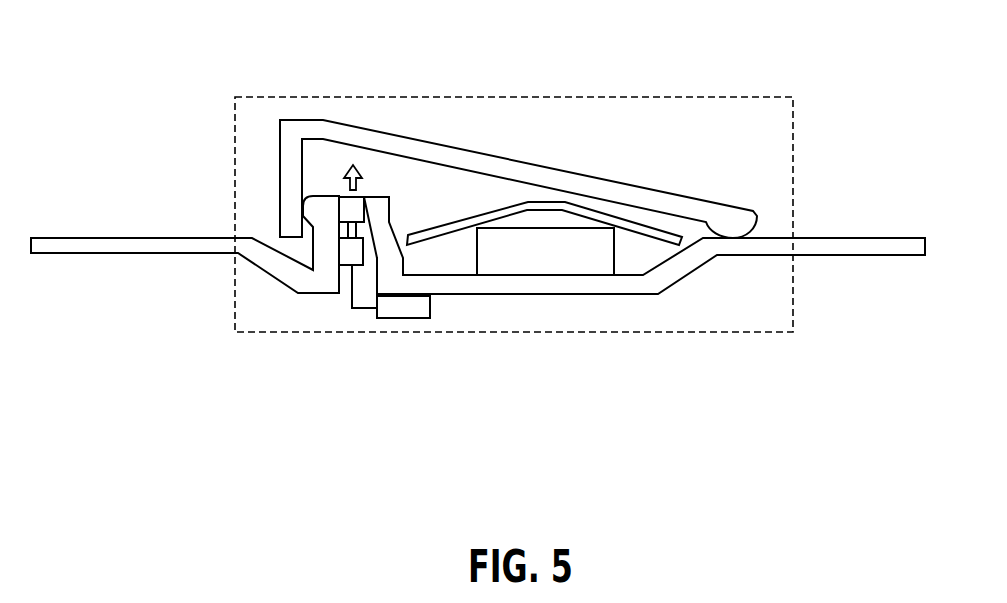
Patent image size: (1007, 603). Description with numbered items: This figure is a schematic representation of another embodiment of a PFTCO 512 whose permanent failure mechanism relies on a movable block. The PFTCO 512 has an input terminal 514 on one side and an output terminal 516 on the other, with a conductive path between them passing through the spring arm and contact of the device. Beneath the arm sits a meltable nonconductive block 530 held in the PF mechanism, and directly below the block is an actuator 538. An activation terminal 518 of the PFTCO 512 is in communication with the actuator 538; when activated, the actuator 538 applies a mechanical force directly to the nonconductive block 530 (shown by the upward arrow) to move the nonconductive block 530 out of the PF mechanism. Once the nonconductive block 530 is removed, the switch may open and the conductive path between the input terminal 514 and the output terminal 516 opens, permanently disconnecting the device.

The PFTCO 512 is at (841, 64).
The input terminal 514 is at (148, 242).
The output terminal 516 is at (860, 250).
The activation terminal 518 is at (413, 313).
The nonconductive block 530 is at (353, 207).
The actuator 538 is at (347, 255).